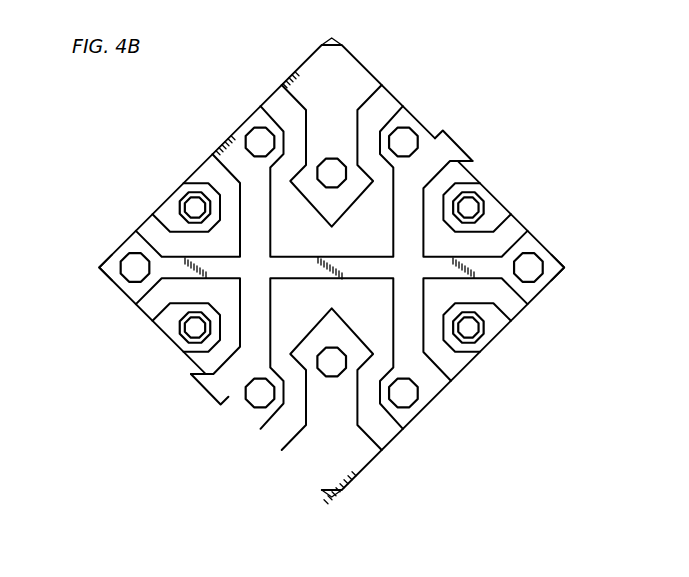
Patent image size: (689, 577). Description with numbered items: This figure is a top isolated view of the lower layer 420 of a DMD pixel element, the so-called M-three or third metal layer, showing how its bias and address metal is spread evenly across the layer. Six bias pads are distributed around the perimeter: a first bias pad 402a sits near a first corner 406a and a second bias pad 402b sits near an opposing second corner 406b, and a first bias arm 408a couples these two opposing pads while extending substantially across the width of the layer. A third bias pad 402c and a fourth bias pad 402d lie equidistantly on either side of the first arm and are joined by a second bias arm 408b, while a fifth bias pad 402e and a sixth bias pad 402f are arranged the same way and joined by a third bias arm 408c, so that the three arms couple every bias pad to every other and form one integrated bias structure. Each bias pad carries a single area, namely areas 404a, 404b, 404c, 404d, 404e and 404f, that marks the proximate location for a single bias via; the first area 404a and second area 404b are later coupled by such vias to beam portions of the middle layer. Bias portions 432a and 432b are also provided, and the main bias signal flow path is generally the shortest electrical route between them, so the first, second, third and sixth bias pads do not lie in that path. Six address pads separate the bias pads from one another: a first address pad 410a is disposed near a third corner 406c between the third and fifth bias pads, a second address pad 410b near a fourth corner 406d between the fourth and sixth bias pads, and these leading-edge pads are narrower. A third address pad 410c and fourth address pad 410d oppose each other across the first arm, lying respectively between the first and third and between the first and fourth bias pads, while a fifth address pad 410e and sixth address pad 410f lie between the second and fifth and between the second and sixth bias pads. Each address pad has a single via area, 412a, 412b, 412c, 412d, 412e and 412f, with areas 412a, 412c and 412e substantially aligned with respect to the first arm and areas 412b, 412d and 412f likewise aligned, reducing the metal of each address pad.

The lower layer 420 is at (578, 84).
The first bias pad 402a is at (160, 292).
The second bias pad 402b is at (546, 285).
The third bias pad 402c is at (225, 138).
The fourth bias pad 402d is at (262, 432).
The fifth bias pad 402e is at (432, 112).
The sixth bias pad 402f is at (448, 392).
The first area 404a is at (123, 255).
The second area 404b is at (548, 257).
The area 404c is at (250, 130).
The area 404d is at (255, 410).
The area 404e is at (407, 127).
The area 404f is at (418, 400).
The first corner 406a is at (97, 268).
The second corner 406b is at (570, 268).
The third corner 406c is at (327, 43).
The fourth corner 406d is at (332, 497).
The first bias arm 408a is at (512, 232).
The second bias arm 408b is at (272, 216).
The third bias arm 408c is at (393, 318).
The first address pad 410a is at (362, 66).
The second address pad 410b is at (355, 466).
The third address pad 410c is at (168, 198).
The fourth address pad 410d is at (165, 333).
The fifth address pad 410e is at (504, 222).
The sixth address pad 410f is at (503, 320).
The area 412a is at (332, 157).
The area 412b is at (333, 377).
The area 412c is at (185, 195).
The area 412d is at (195, 345).
The area 412e is at (482, 200).
The area 412f is at (482, 340).
The bias portion 432a is at (218, 402).
The bias portion 432b is at (452, 152).